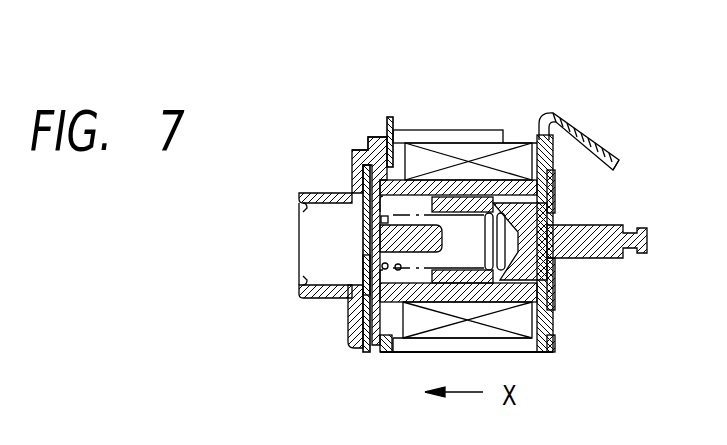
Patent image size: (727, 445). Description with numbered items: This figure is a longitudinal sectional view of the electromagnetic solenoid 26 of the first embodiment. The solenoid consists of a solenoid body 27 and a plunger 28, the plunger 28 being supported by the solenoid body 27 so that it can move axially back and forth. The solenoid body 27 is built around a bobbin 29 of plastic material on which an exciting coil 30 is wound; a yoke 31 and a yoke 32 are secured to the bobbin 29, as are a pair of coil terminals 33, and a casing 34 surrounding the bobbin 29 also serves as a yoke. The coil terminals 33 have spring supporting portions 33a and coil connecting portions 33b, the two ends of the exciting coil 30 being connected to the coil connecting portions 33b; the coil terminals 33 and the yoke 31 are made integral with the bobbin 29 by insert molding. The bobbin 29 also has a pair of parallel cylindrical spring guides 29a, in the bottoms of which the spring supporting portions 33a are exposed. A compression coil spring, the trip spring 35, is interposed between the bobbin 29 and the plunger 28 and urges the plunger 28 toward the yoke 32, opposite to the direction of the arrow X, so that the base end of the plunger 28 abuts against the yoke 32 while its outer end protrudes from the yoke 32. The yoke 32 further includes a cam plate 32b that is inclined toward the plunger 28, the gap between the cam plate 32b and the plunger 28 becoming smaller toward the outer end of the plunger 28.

The electromagnetic solenoid 26 is at (583, 116).
The solenoid body 27 is at (363, 146).
The plunger 28 is at (595, 258).
The bobbin 29 is at (350, 162).
The spring guides 29a is at (308, 252).
The exciting coil 30 is at (522, 143).
The yoke 31 is at (405, 200).
The yoke 32 is at (557, 200).
The cam plate 32b is at (617, 160).
The coil terminals 33 is at (350, 195).
The spring supporting portions 33a is at (360, 268).
The coil connecting portions 33b is at (381, 165).
The casing 34 is at (443, 135).
The trip spring 35 is at (486, 212).